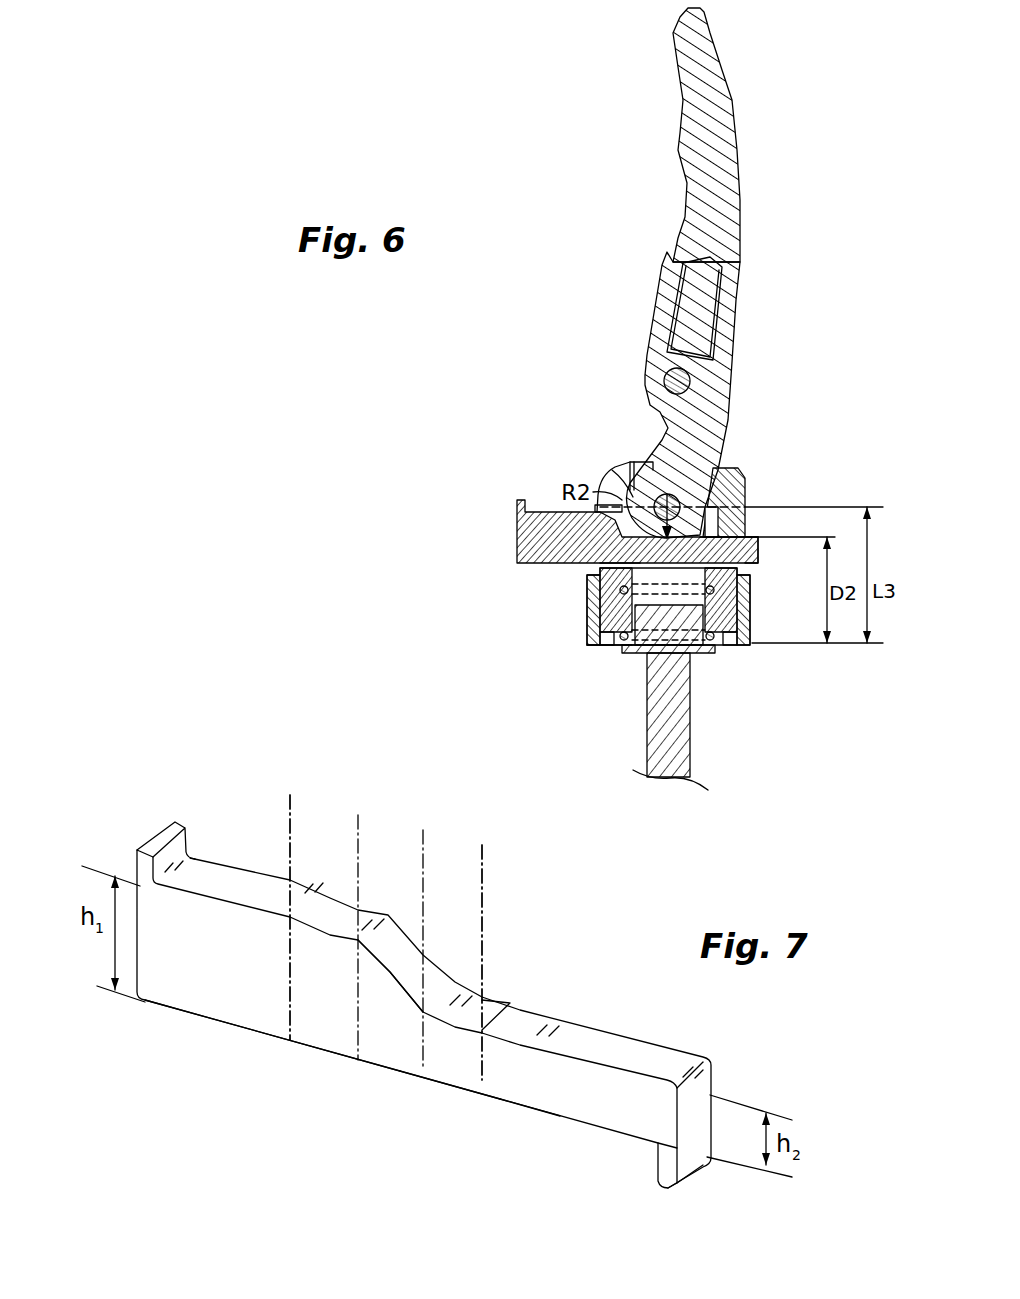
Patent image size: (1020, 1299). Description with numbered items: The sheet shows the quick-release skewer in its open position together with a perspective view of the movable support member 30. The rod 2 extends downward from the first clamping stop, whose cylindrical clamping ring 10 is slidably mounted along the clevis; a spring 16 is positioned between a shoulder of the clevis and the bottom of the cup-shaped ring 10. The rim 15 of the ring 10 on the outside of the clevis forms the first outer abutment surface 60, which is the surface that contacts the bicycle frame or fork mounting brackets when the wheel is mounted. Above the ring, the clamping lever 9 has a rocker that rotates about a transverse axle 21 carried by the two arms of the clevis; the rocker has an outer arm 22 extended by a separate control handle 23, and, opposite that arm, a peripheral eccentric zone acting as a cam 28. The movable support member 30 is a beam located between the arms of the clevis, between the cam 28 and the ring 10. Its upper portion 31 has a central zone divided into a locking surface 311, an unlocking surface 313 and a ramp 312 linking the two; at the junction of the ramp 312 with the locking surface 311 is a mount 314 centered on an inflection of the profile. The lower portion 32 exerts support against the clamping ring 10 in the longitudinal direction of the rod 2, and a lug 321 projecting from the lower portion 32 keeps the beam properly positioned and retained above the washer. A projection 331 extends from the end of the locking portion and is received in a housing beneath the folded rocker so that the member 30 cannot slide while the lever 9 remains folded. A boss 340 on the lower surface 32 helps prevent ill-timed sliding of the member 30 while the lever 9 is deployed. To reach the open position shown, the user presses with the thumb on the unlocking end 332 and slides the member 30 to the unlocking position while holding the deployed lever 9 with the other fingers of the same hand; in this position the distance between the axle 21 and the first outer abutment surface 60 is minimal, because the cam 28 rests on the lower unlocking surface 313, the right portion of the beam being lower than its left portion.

In FIG. 6, the clamping lever 9 is at (752, 166).
In FIG. 6, the control handle 23 is at (700, 213).
In FIG. 6, the outer arm 22 is at (686, 317).
In FIG. 6, the transverse pin or axle 21 is at (672, 386).
In FIG. 6, the cam 28 is at (633, 480).
In FIG. 6, the movable support member 30 is at (530, 537).
In FIG. 7, the movable support member 30 is at (229, 838).
In FIG. 6, the boss 340 is at (715, 556).
In FIG. 7, the boss 340 is at (495, 1098).
In FIG. 6, the unlocking surface 313 is at (615, 564).
In FIG. 7, the unlocking surface 313 is at (449, 844).
In FIG. 6, the unlocking end 332 is at (757, 570).
In FIG. 7, the unlocking end 332 is at (663, 1180).
In FIG. 6, the clamping ring 10 is at (590, 605).
In FIG. 6, the rim 15 is at (598, 646).
In FIG. 6, the spring 16 is at (623, 648).
In FIG. 6, the first outer abutment surface 60 is at (724, 656).
In FIG. 6, the rod 2 is at (675, 766).
In FIG. 7, the projection 331 is at (160, 838).
In FIG. 7, the upper portion 31 is at (300, 769).
In FIG. 7, the locking surface 311 is at (330, 811).
In FIG. 7, the ramp 312 is at (400, 826).
In FIG. 7, the lower portion 32 is at (200, 1017).
In FIG. 7, the mount 314 is at (367, 947).
In FIG. 7, the lug 321 is at (408, 1076).